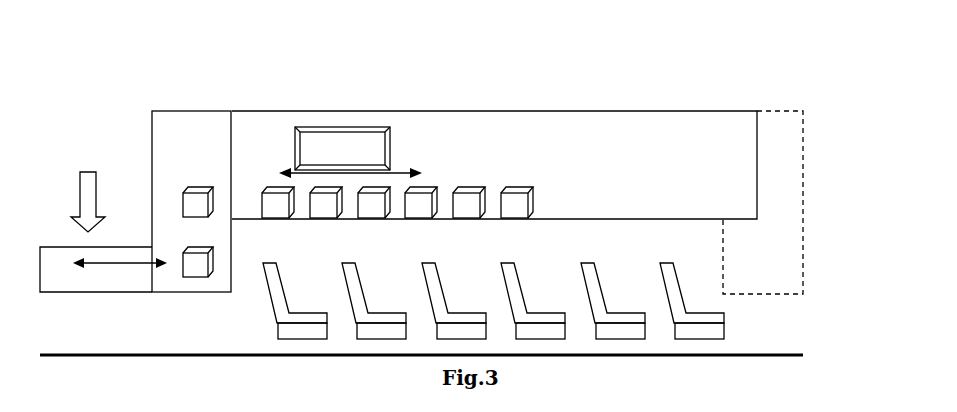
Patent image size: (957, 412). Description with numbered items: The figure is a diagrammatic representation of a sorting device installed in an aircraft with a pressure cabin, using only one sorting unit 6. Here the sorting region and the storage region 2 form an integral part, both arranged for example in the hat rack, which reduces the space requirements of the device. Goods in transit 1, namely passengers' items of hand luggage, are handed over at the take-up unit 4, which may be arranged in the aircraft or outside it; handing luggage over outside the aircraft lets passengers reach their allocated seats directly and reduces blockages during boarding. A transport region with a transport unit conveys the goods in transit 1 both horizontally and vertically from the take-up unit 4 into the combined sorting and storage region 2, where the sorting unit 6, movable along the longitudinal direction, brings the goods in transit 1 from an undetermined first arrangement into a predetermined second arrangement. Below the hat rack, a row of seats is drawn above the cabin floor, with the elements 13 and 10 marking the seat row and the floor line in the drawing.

The goods in transit 1 is at (193, 278).
The storage region 2 is at (568, 129).
The take-up unit 4 is at (69, 242).
The sorting unit 6 is at (352, 138).
The floor / ground 10 is at (758, 355).
The seat 13 is at (719, 307).